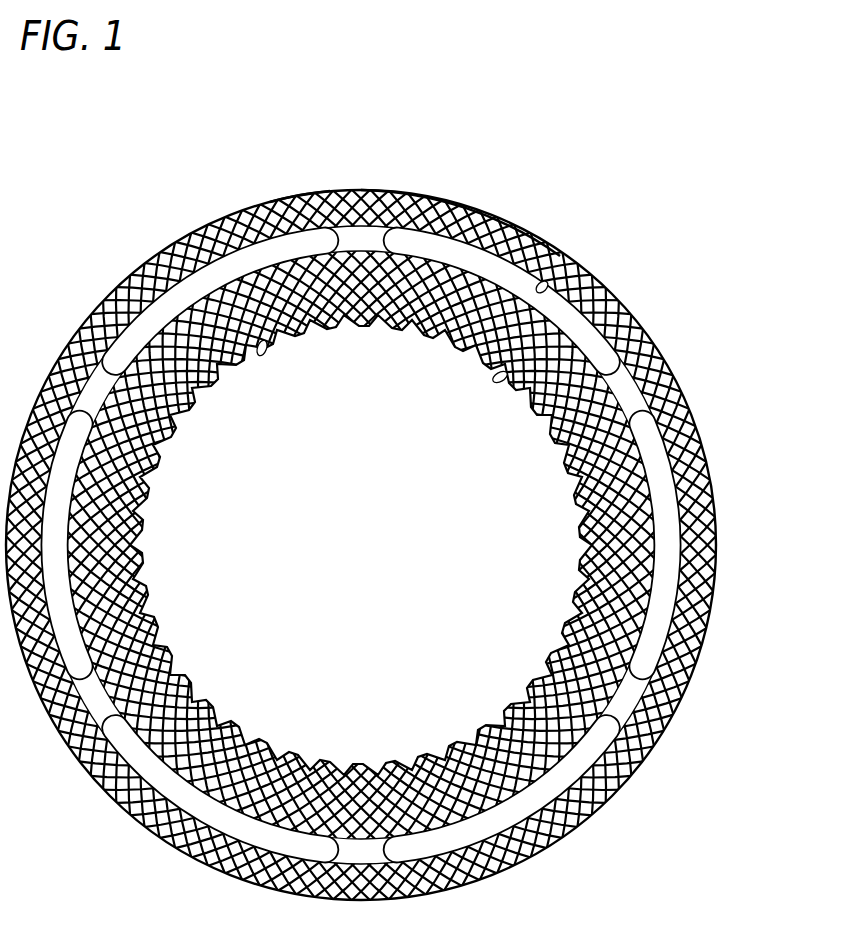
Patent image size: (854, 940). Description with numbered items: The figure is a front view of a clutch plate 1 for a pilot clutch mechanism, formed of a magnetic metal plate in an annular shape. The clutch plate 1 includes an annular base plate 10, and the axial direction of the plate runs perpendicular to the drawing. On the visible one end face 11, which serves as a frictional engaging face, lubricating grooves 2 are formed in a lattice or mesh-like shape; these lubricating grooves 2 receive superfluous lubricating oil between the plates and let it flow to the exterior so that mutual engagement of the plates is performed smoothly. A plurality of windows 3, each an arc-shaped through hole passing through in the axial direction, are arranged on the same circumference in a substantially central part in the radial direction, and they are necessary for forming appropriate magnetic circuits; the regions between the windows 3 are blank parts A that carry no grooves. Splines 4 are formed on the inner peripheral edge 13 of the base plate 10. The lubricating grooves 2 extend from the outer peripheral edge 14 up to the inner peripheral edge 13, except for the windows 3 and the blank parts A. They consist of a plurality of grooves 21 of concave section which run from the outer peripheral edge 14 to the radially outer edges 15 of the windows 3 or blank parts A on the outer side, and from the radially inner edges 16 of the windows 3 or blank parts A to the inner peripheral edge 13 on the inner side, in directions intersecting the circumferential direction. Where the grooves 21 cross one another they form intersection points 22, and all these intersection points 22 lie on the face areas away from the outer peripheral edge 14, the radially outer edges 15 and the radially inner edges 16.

The clutch plate 1 is at (709, 170).
The lubricating grooves 2 is at (375, 194).
The windows 3 is at (445, 202).
The splines 4 is at (238, 282).
The base plate 10 is at (132, 271).
The one end face 11 is at (480, 220).
The inner peripheral edge 13 is at (584, 357).
The outer peripheral edge 14 is at (530, 227).
The radially outer edges 15 is at (570, 260).
The radially inner edges 16 is at (628, 352).
The grooves 21 is at (313, 190).
The intersection points 22 is at (289, 194).
The blank parts A is at (632, 396).